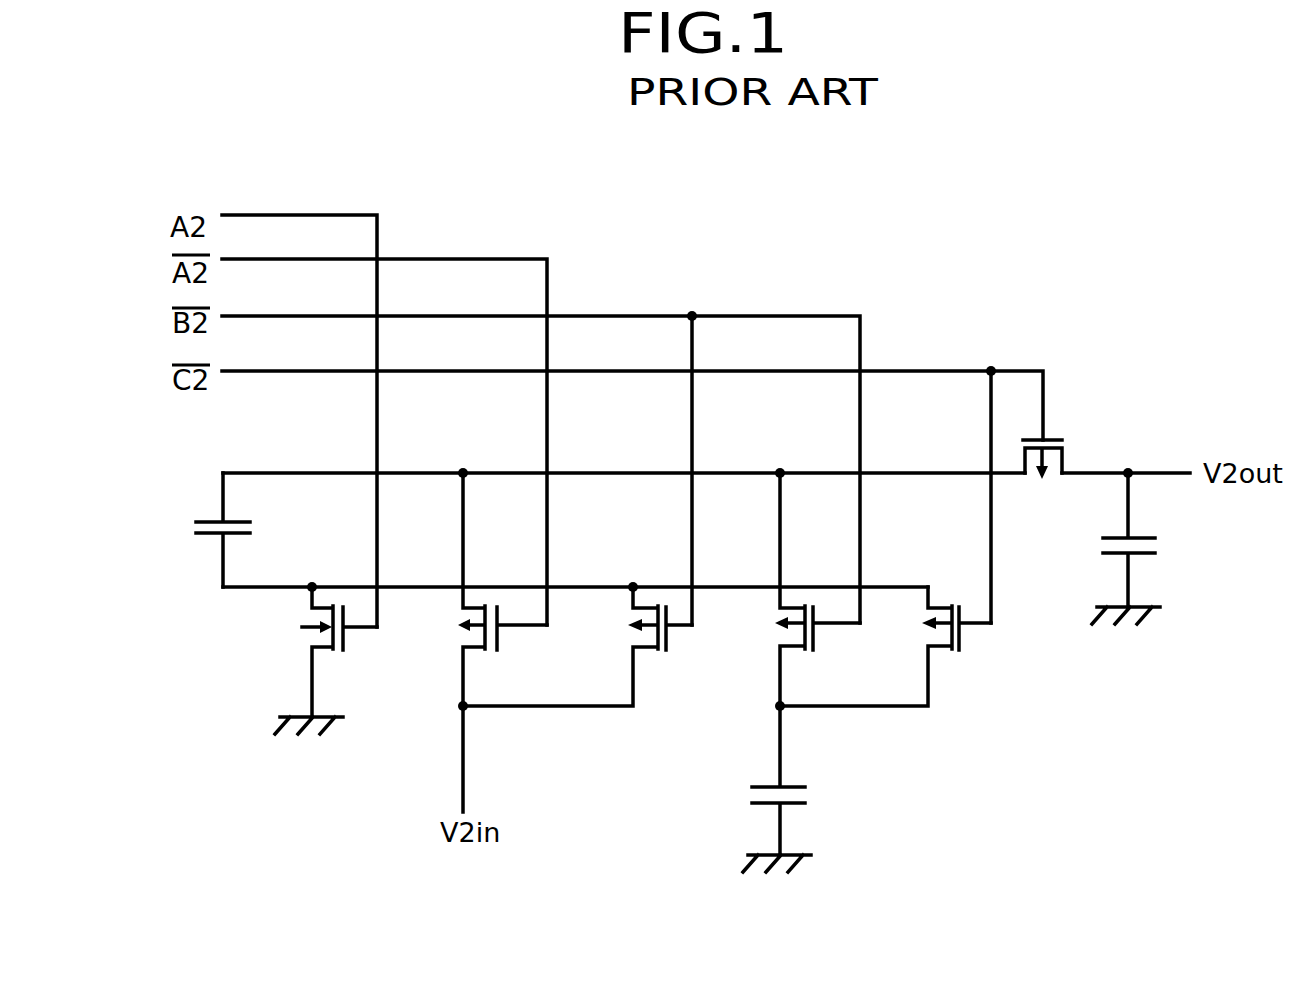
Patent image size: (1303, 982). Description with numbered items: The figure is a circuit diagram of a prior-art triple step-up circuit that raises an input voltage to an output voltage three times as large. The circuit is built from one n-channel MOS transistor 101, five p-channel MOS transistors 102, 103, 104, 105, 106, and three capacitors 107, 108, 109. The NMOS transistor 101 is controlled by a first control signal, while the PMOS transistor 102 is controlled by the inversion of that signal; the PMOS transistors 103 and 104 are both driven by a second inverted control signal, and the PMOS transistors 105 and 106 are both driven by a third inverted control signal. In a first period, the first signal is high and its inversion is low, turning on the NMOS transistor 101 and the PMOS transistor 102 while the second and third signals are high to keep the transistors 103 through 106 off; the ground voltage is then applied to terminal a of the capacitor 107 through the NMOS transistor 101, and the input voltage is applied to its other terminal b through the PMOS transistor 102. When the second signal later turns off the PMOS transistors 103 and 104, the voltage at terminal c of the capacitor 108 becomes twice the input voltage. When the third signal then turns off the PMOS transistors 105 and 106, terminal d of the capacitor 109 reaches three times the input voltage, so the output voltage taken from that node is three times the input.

The NMOS transistor 101 is at (305, 641).
The PMOS transistor 102 is at (458, 640).
The PMOS transistor 103 is at (622, 645).
The PMOS transistor 104 is at (772, 640).
The PMOS transistor 105 is at (914, 638).
The PMOS transistor 106 is at (1071, 448).
The capacitor 107 is at (206, 510).
The capacitor 108 is at (748, 800).
The capacitor 109 is at (1160, 545).